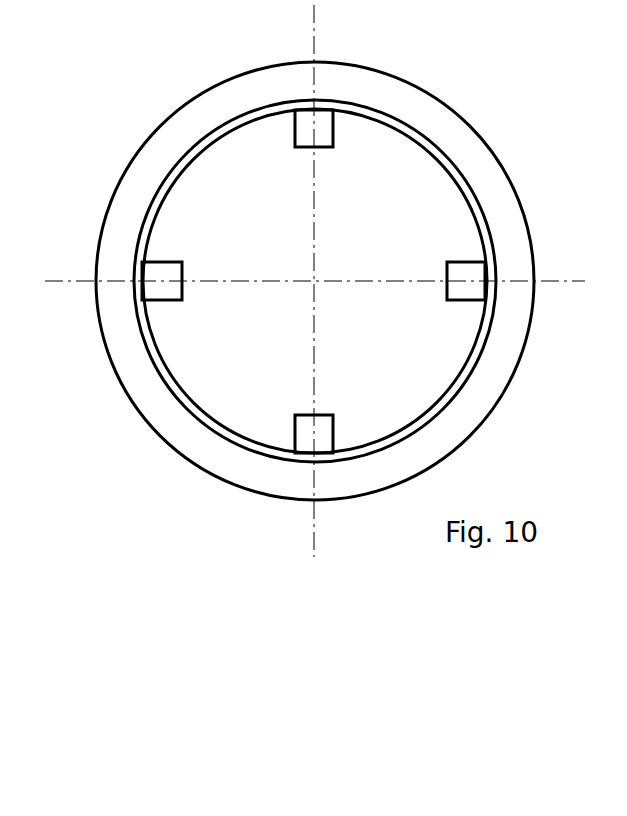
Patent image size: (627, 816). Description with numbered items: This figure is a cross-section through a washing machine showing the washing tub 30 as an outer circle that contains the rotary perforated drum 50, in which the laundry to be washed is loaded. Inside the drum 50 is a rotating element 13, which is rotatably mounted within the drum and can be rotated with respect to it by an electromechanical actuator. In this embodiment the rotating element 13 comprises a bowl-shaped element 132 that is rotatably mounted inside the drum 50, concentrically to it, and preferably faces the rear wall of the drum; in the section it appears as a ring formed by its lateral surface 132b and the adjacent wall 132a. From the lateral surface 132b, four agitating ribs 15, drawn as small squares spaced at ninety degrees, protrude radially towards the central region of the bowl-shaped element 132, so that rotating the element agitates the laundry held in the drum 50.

The rotating element 13 is at (420, 205).
The agitating ribs 15 is at (312, 126).
The washing tub 30 is at (450, 107).
The rotary perforated drum 50 is at (218, 127).
The bowl-shaped element 132 is at (344, 290).
The inner surface of tubular body 132a is at (380, 368).
The lateral surface 132b is at (467, 345).